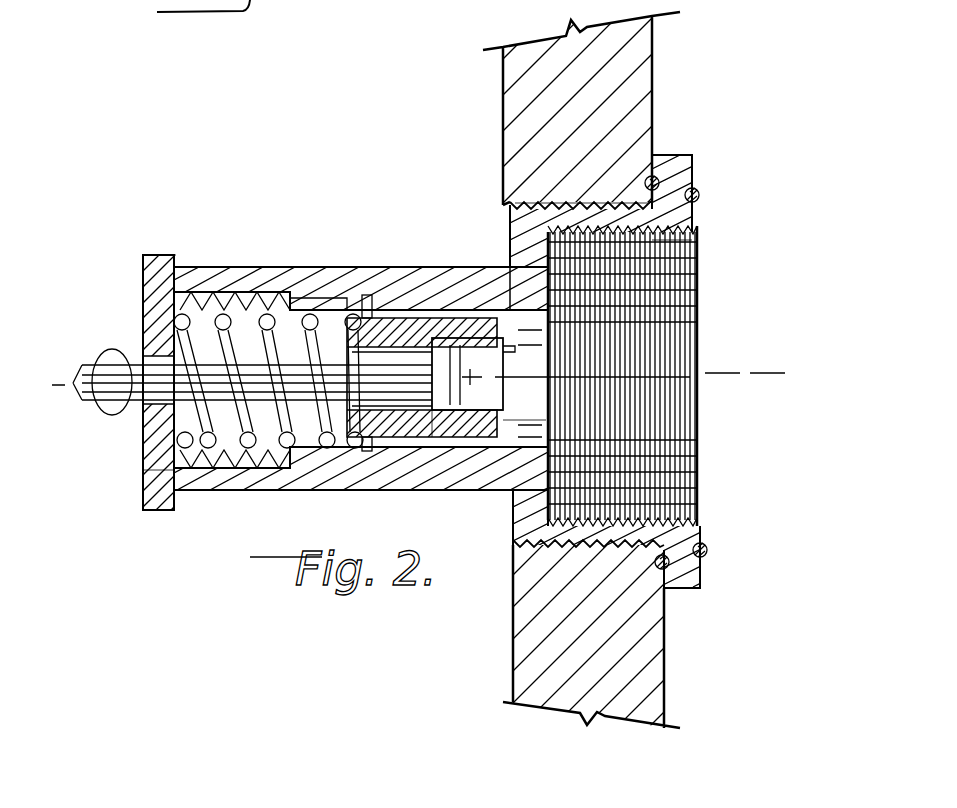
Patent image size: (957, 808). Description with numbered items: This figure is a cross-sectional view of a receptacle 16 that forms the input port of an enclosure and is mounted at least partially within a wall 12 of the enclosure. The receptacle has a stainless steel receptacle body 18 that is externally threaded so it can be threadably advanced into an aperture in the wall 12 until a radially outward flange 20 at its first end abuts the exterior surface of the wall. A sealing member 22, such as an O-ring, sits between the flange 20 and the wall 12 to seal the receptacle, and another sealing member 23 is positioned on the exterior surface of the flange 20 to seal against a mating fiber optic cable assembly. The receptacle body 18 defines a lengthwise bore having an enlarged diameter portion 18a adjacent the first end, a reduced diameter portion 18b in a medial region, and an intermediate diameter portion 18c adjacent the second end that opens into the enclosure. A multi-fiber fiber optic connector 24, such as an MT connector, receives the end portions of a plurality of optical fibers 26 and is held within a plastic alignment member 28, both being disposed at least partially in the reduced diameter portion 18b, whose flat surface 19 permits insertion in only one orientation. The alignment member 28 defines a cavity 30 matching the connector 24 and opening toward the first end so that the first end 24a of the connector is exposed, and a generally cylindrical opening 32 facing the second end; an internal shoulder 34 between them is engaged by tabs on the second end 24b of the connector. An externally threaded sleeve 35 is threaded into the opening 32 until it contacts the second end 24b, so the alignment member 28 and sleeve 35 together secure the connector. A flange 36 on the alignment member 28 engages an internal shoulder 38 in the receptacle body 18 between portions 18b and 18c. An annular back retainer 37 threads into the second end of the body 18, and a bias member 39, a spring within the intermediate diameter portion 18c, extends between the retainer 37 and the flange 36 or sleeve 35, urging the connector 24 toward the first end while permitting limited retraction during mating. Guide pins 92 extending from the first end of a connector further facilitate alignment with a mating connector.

The wall 12 is at (648, 52).
The receptacle 16 is at (392, 185).
The receptacle body 18 is at (247, 267).
The enlarged diameter portion 18a is at (670, 248).
The reduced diameter portion 18b is at (460, 267).
The intermediate diameter portion 18c is at (205, 490).
The flat surface 19 is at (513, 312).
The flange 20 is at (672, 165).
The sealing member 22 is at (700, 575).
The sealing member 23 is at (700, 192).
The fiber optic connector 24 is at (490, 363).
The first end 24a is at (520, 432).
The second end 24b is at (375, 405).
The optical fibers 26 is at (108, 350).
The alignment member 28 is at (430, 438).
The cavity 30 is at (470, 432).
The generally cylindrical opening 32 is at (412, 295).
The internal shoulder 34 is at (470, 418).
The externally threaded sleeve 35 is at (328, 298).
The flange 36 is at (365, 455).
The annular back retainer 37 is at (143, 445).
The internal shoulder 38 is at (372, 295).
The bias member 39 is at (143, 475).
The guide pins 92 is at (506, 400).